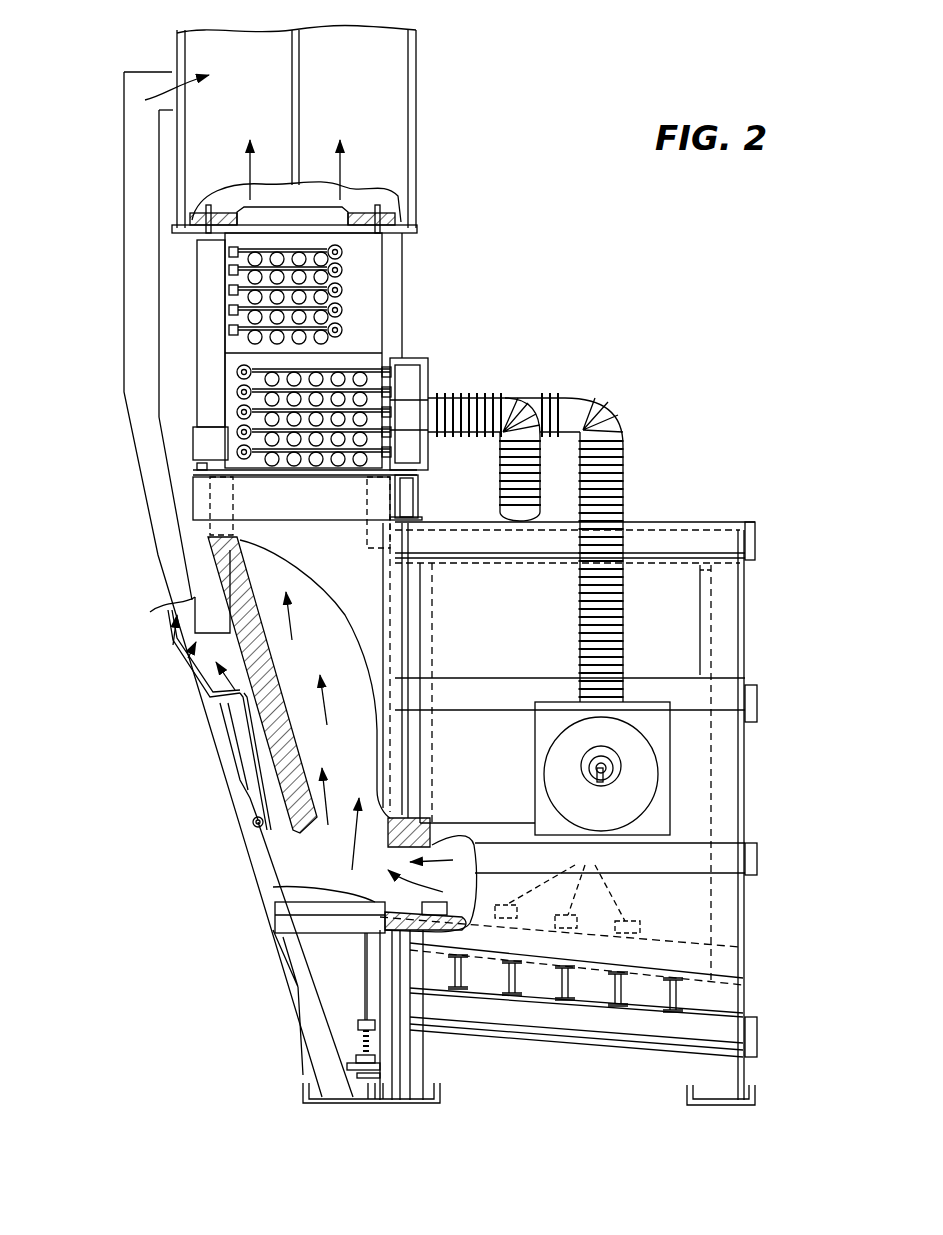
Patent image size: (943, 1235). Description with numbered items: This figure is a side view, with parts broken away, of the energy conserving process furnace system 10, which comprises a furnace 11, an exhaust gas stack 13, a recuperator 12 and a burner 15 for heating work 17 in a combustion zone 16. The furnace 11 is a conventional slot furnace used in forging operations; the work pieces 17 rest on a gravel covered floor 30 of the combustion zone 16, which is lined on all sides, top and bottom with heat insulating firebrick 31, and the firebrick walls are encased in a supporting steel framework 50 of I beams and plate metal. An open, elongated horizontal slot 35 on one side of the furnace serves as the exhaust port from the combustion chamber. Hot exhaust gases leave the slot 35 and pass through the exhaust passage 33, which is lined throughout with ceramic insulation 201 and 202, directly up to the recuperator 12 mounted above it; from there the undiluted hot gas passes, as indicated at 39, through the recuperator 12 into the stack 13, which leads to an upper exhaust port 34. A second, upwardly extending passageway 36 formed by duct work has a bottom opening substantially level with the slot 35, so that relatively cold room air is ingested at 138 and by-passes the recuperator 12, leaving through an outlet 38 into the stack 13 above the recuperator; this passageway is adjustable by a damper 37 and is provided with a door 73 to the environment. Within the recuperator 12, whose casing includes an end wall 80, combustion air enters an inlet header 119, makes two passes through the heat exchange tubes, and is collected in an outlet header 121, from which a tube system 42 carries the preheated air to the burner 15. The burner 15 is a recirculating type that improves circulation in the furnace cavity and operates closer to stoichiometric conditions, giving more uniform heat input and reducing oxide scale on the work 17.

The energy conserving process furnace system 10 is at (672, 461).
The furnace 11 is at (670, 657).
The recuperator 12 is at (368, 262).
The exhaust gas stack 13 is at (428, 73).
The burner 15 is at (625, 793).
The combustion zone 16 is at (511, 634).
The work 17 is at (470, 893).
The gravel covered floor 30 is at (680, 936).
The firebrick 31 is at (740, 568).
The exhaust passage 33 is at (253, 568).
The upper exhaust port 34 is at (420, 38).
The slot 35 is at (438, 850).
The second section passageway 36 is at (153, 488).
The damper 37 is at (190, 663).
The outlet 38 is at (195, 80).
The undiluted hot gas flow 39 is at (373, 875).
The tube system 42 is at (480, 400).
The supporting steel framework 50 is at (760, 1033).
The door 73 is at (258, 837).
The end wall 80 is at (370, 298).
The inlet header 119 is at (203, 313).
The outlet header 121 is at (405, 372).
The air ingestion point 138 is at (283, 834).
The ceramic insulation 201 is at (422, 492).
The ceramic insulation 202 is at (265, 702).